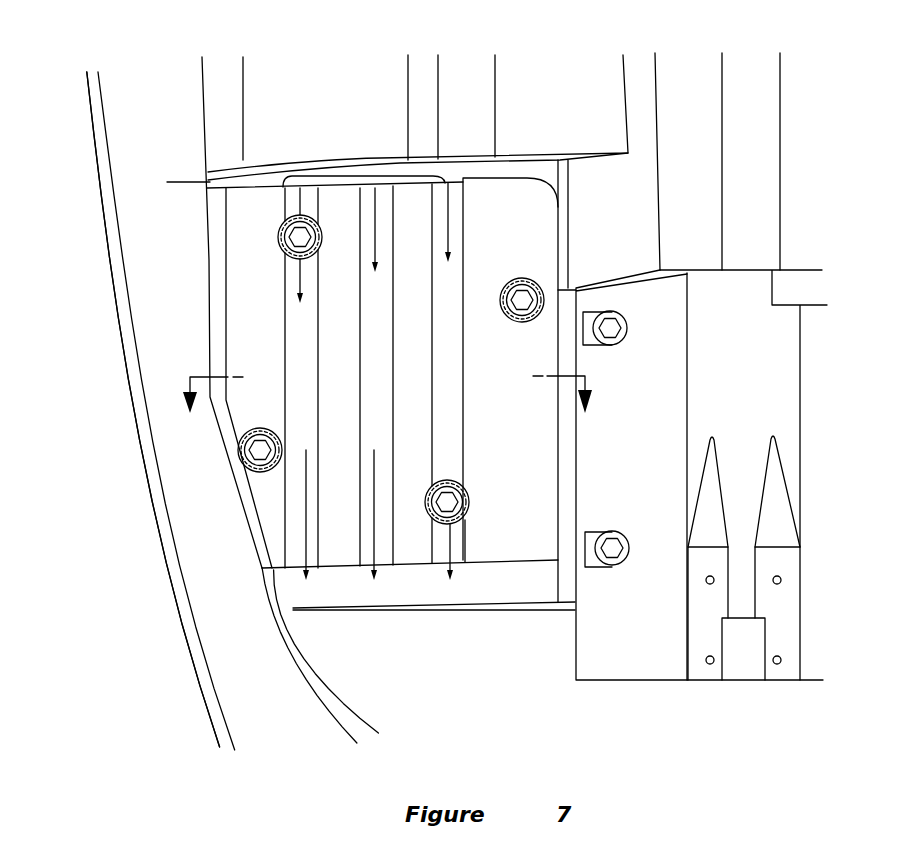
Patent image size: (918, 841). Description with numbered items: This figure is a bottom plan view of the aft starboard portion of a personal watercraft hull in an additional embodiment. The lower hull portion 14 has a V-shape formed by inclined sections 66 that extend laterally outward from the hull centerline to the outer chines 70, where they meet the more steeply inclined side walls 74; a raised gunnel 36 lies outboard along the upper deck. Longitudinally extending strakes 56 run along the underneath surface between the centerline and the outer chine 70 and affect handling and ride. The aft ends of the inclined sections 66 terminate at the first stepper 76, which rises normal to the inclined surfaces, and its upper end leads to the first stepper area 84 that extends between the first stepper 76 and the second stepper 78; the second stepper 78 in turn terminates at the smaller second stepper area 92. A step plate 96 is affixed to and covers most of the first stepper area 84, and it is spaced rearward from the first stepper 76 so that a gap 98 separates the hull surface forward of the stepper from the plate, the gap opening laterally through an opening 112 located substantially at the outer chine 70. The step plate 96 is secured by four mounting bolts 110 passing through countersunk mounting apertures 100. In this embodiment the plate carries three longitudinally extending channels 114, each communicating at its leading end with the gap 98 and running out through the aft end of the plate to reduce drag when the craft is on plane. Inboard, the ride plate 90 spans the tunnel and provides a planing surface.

The lower hull portion 14 is at (106, 352).
The raised gunnels 36 is at (152, 517).
The strakes 56 is at (480, 78).
The inclined sections 66 is at (258, 102).
The outer chines 70 is at (207, 82).
The side walls 74 is at (192, 585).
The first stepper 76 is at (547, 158).
The second stepper 78 is at (535, 607).
The first stepper areas 84 is at (295, 592).
The ride plate 90 is at (648, 665).
The second stepper area 92 is at (347, 695).
The step plate 96 is at (232, 318).
The gap 98 is at (343, 167).
The mounting aperture 100 is at (293, 257).
The mounting bolts 110 is at (283, 218).
The opening 112 is at (194, 190).
The longitudinally extending channels 114 is at (310, 357).